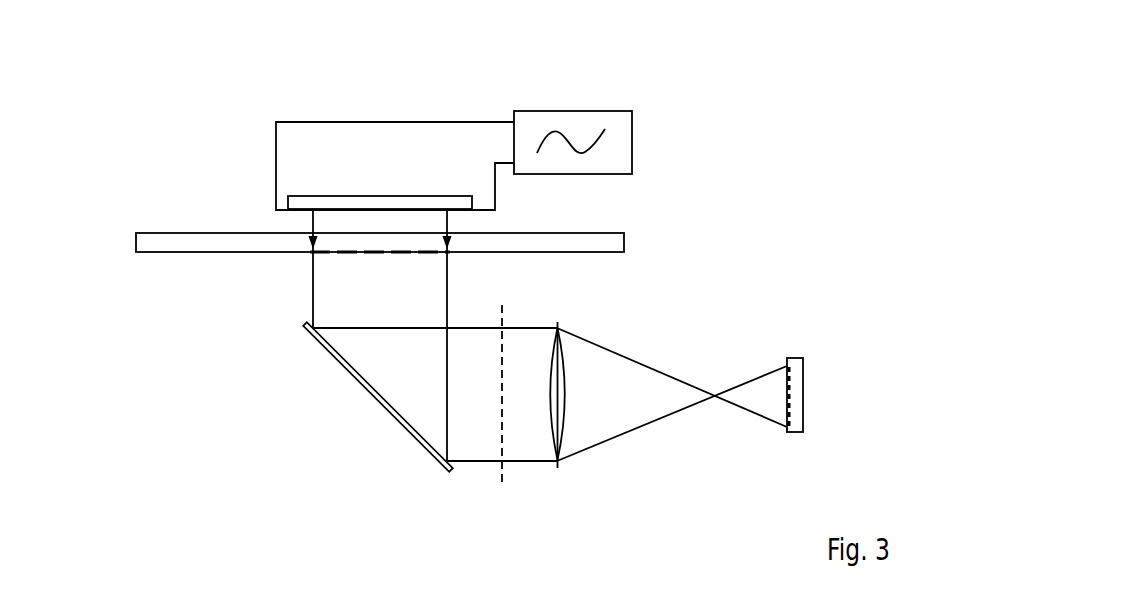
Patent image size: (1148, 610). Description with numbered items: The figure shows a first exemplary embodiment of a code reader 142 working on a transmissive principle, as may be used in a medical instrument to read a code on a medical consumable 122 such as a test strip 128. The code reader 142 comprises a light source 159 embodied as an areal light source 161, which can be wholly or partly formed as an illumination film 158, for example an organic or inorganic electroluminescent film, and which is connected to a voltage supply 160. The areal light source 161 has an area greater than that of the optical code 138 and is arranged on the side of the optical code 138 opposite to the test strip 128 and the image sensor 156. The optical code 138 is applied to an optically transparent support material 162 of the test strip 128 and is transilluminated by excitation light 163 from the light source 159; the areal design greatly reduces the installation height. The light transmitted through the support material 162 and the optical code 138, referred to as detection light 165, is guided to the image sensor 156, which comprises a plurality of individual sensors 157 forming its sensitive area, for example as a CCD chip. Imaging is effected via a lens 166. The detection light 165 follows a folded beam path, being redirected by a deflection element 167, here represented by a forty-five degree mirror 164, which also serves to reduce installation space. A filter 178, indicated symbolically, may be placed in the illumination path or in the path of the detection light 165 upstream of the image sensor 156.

The code reader 142 is at (701, 97).
The illumination film 158 is at (388, 132).
The light source 159 is at (388, 132).
The areal light source 161 is at (378, 195).
The voltage supply 160 is at (570, 111).
The excitation light 163 is at (312, 223).
The medical consumable 122 is at (481, 236).
The test strip 128 is at (481, 236).
The support material 162 is at (626, 240).
The optical code 138 is at (349, 259).
The detection light 165 is at (447, 292).
The mirror 164 is at (347, 397).
The deflection element 167 is at (377, 400).
The filter 178 is at (498, 470).
The lens 166 is at (563, 433).
The image sensor 156 is at (794, 357).
The individual sensors 157 is at (784, 412).